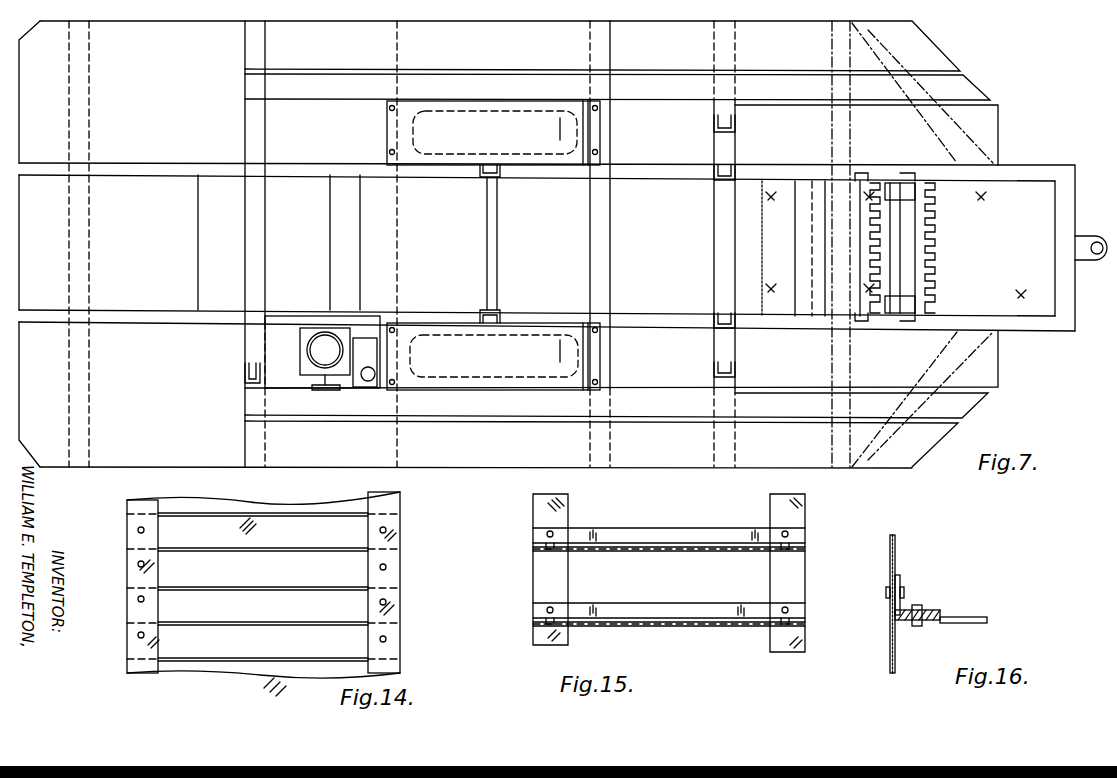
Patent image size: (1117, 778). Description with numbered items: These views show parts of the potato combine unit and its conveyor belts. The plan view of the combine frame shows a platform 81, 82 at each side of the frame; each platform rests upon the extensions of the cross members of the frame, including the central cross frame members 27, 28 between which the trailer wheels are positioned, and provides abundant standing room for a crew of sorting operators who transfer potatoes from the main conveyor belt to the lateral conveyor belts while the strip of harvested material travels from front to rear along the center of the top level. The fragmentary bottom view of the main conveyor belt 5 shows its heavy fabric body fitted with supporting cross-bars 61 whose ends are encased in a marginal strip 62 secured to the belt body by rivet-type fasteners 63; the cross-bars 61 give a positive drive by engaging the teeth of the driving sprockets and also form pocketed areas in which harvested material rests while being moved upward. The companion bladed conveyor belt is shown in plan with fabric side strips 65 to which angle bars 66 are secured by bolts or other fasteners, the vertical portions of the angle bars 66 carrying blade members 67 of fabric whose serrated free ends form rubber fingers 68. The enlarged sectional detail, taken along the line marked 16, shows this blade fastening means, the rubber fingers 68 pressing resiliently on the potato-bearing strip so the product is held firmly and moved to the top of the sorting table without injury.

In FIG. 7, the platform 82 is at (650, 34).
In FIG. 7, the platform 81 is at (510, 458).
In FIG. 7, the cross frame member 27 is at (395, 229).
In FIG. 7, the cross frame member 28 is at (605, 229).
In FIG. 7, the rubber fingers 68 is at (932, 232).
In FIG. 15, the rubber fingers 68 is at (658, 551).
In FIG. 16, the rubber fingers 68 is at (975, 619).
In FIG. 14, the main conveyor belt 5 is at (348, 530).
In FIG. 14, the supporting cross-bars 61 is at (355, 549).
In FIG. 14, the marginal strip 62 is at (393, 613).
In FIG. 14, the rivet-type fasteners 63 is at (390, 530).
In FIG. 15, the fabric side strips 65 is at (793, 572).
In FIG. 16, the fabric side strips 65 is at (890, 636).
In FIG. 15, the angle bars 66 is at (632, 536).
In FIG. 16, the angle bars 66 is at (900, 583).
In FIG. 16, the blade members 67 is at (940, 614).
In FIG. 15, the section line 16- 16 is at (723, 667).